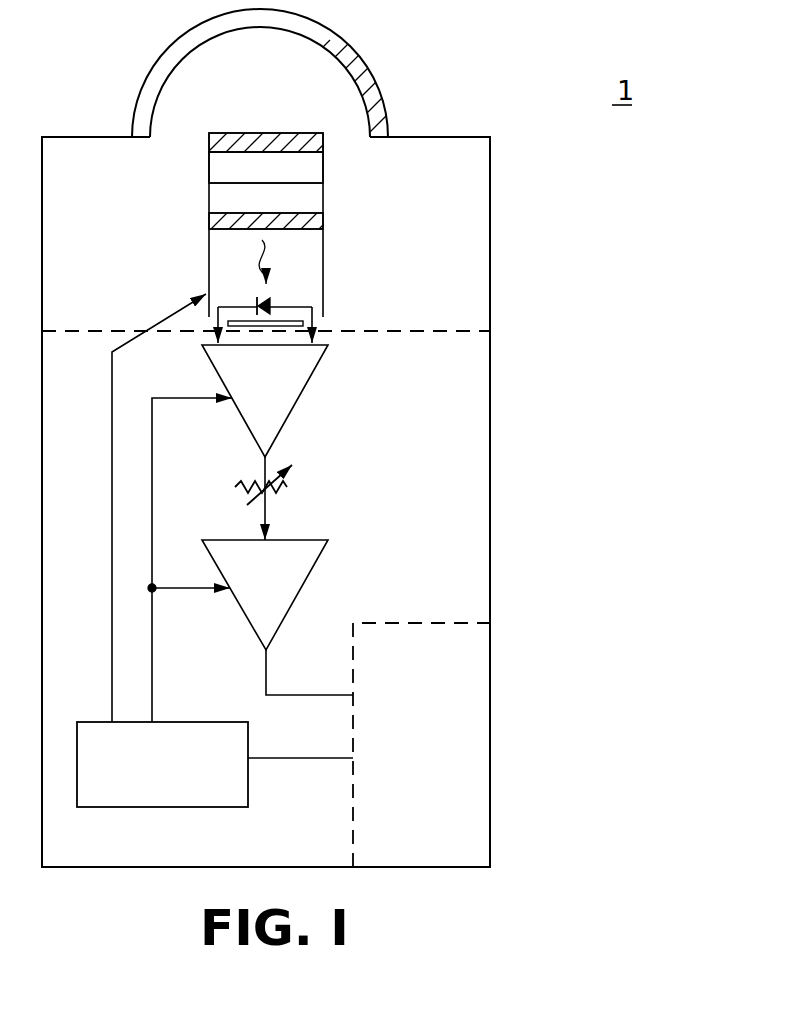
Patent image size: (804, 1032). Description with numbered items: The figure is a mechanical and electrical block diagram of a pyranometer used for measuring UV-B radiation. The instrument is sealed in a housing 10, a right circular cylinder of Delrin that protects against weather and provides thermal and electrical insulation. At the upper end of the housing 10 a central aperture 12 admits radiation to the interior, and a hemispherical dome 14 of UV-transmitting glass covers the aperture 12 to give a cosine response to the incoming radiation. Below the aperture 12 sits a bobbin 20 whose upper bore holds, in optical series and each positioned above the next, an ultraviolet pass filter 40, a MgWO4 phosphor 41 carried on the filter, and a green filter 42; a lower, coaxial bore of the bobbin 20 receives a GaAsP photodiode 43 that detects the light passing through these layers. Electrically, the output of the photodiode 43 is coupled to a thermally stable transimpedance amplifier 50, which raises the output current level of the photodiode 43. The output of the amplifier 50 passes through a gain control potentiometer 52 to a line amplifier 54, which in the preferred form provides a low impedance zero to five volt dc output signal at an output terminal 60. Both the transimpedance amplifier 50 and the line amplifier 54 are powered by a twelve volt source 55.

The housing 10 is at (490, 490).
The central aperture 12 is at (352, 148).
The dome 14 is at (383, 92).
The bobbin 20 is at (323, 255).
The ultraviolet pass filter 40 is at (243, 142).
The MgWO4 phosphor 41 is at (282, 180).
The green filter 42 is at (312, 218).
The GaAsP photodiode 43 is at (265, 291).
The transimpedance amplifier 50 is at (293, 380).
The gain control potentiometer 52 is at (283, 485).
The line amplifier 54 is at (306, 556).
The 12 volt source 55 is at (224, 793).
The output terminal 60 is at (353, 695).